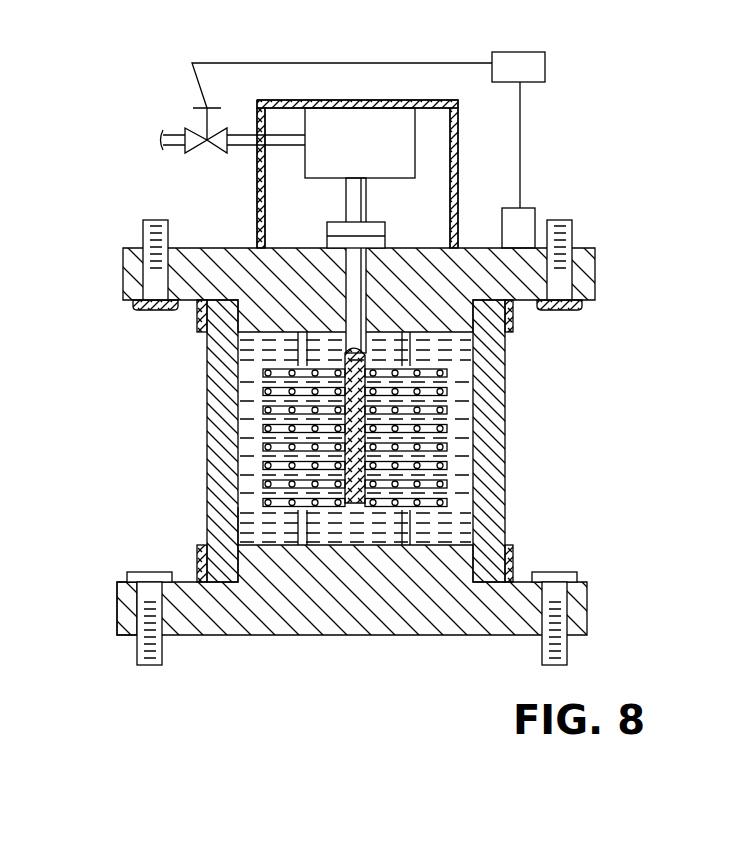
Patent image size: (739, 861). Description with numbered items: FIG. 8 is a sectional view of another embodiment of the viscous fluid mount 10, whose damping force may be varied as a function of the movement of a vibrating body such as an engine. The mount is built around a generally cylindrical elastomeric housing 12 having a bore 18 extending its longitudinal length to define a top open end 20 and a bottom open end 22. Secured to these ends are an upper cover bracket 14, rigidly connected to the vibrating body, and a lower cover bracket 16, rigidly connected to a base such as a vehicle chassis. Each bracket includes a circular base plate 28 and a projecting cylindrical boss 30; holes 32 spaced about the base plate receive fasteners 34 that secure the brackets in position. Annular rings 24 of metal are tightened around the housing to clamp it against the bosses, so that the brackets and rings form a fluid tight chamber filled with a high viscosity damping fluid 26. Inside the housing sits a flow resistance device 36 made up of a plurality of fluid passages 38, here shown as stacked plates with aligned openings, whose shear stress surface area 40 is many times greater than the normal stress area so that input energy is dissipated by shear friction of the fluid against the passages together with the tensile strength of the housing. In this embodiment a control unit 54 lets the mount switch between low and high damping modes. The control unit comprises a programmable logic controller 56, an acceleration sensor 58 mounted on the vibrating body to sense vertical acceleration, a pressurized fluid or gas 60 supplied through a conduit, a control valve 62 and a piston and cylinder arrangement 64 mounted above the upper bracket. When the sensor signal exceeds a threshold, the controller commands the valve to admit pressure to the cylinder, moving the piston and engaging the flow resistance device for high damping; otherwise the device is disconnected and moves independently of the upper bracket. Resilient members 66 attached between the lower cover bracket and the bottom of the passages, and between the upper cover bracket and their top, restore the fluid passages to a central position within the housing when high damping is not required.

The viscous fluid mount 10 is at (590, 345).
The elastomeric housing 12 is at (385, 441).
The upper cover bracket 14 is at (388, 307).
The lower cover bracket 16 is at (260, 622).
The bore 18 is at (455, 382).
The top open end 20 is at (280, 330).
The bottom open end 22 is at (452, 535).
The annular rings 24 is at (513, 333).
The high viscosity damping fluid 26 is at (247, 512).
The circular base plate 28 is at (583, 255).
The boss 30 is at (392, 247).
The holes 32 is at (117, 607).
The fasteners 34 is at (155, 220).
The flow resistance device 36 is at (492, 425).
The fluid passages 38 is at (457, 502).
The shear stress surface area 40 is at (347, 446).
The control unit 54 is at (548, 135).
The programmable logic controller 56 is at (515, 52).
The acceleration sensor 58 is at (523, 208).
The pressurized fluid or gas 60 is at (163, 133).
The control valve 62 is at (207, 138).
The piston and cylinder arrangement 64 is at (365, 128).
The resilient members 66 is at (302, 545).